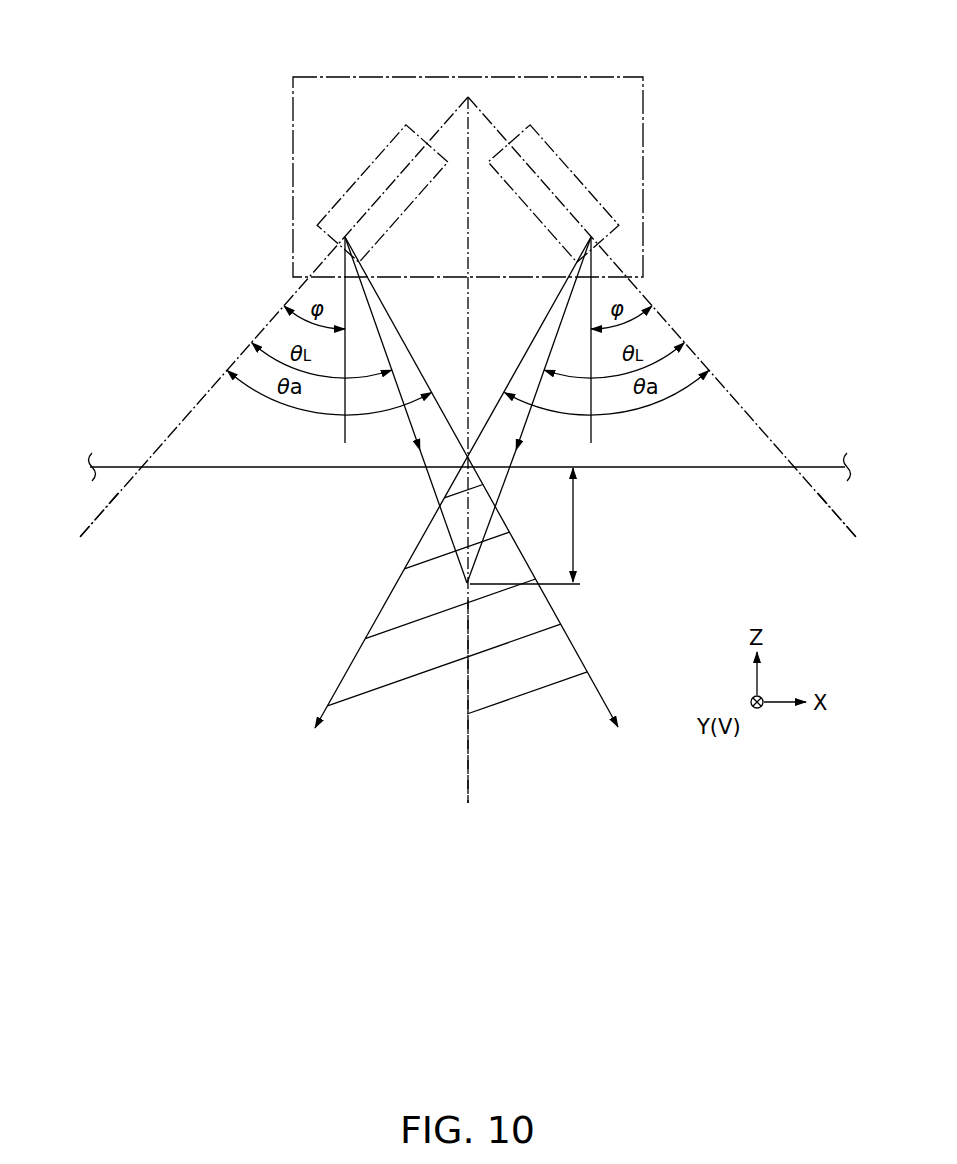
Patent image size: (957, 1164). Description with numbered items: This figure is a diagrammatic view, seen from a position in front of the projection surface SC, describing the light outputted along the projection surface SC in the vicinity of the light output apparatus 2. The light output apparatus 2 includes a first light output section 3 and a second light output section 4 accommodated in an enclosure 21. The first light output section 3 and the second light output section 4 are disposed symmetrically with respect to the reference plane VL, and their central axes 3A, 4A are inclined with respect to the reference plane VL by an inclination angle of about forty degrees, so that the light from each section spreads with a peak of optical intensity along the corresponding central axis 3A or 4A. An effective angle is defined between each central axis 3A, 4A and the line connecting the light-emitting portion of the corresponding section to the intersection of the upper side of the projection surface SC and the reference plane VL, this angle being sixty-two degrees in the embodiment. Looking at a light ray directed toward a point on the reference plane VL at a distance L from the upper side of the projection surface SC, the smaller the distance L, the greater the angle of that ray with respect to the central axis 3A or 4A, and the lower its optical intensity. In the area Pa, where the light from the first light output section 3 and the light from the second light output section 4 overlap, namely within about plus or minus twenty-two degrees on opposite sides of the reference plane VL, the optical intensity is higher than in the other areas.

The light output apparatus 2 is at (686, 69).
The enclosure 21 is at (468, 76).
The first light output section 3 is at (399, 132).
The second light output section 4 is at (537, 132).
The central axis 3A is at (107, 509).
The central axis 4A is at (830, 509).
The projection surface SC is at (708, 466).
The reference plane VL is at (470, 778).
The overlap area Pa is at (562, 636).
The distance L is at (531, 526).